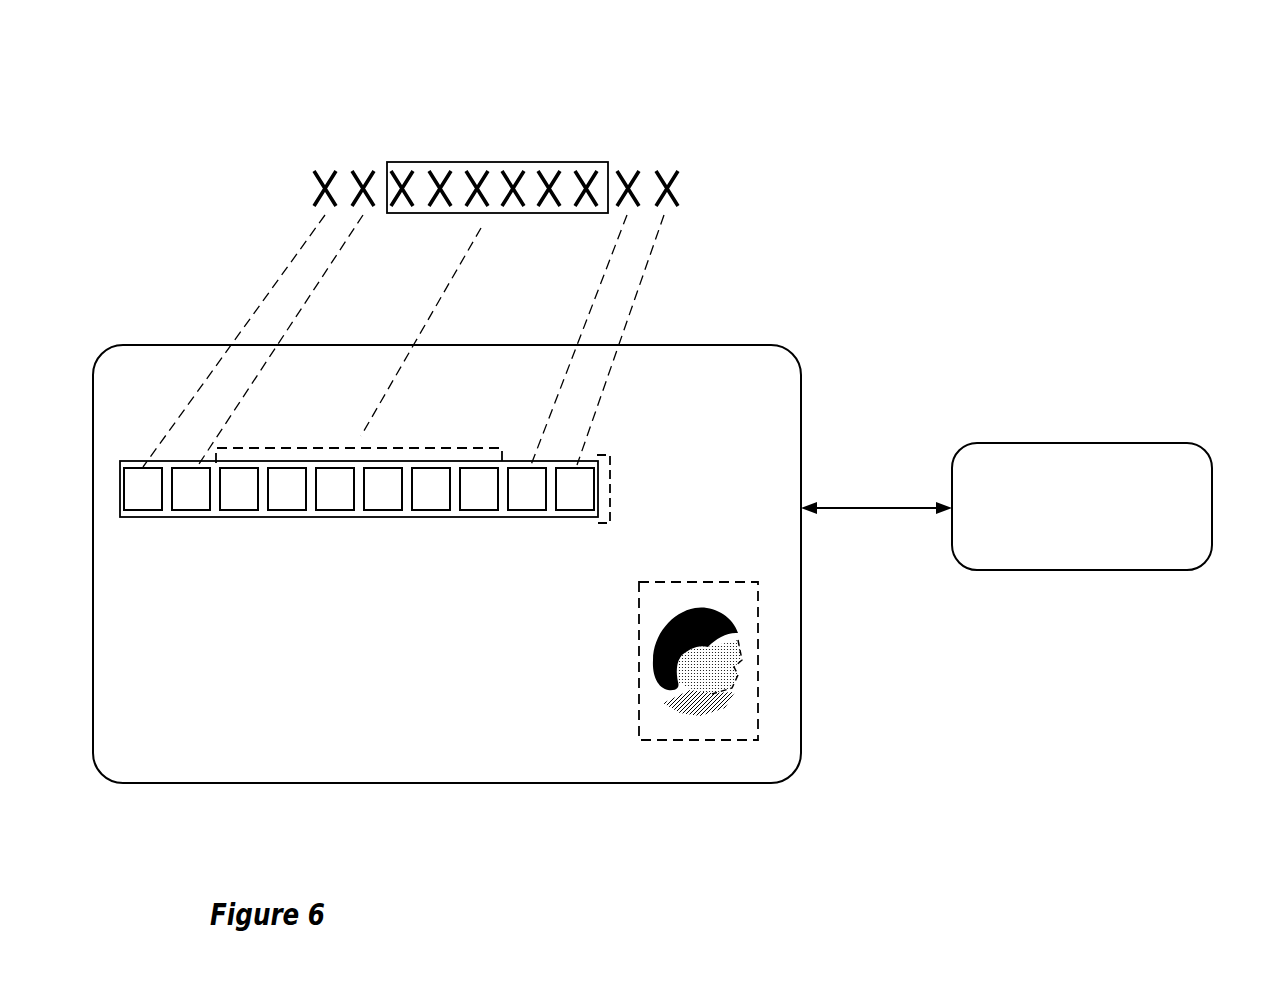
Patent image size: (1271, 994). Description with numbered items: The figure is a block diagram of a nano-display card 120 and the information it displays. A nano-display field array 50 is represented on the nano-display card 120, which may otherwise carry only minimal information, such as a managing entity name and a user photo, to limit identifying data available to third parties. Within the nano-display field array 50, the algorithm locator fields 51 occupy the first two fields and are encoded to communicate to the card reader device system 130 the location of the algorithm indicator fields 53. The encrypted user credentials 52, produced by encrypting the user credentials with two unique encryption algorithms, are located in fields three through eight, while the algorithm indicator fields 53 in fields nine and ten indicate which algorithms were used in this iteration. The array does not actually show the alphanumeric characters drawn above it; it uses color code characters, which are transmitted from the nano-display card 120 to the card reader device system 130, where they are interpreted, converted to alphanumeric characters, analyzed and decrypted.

The nano-display field array 50 is at (396, 511).
The algorithm locator fields 51 is at (350, 163).
The encrypted user credentials 52 is at (492, 156).
The algorithm indicator fields 53 is at (673, 163).
The nano-display card 120 is at (447, 564).
The card reader device system 130 is at (1006, 506).